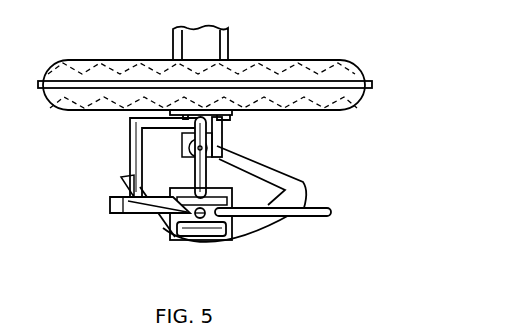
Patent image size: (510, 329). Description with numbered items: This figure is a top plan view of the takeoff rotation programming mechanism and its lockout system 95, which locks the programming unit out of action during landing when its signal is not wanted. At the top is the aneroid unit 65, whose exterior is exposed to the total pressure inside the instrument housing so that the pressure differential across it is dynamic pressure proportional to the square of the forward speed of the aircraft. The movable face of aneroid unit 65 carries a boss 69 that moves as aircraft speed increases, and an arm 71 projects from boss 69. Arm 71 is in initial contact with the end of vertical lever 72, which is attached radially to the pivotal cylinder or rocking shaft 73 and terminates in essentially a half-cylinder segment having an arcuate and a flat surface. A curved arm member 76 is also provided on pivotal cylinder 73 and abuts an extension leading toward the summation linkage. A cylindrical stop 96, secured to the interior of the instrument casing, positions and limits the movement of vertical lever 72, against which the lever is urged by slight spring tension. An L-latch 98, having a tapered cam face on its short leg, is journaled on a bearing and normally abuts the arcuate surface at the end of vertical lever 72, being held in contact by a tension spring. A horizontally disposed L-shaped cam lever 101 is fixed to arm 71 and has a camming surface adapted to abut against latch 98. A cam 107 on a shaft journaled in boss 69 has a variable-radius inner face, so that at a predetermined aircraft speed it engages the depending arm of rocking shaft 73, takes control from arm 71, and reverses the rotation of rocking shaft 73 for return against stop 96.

The aneroid unit 65 is at (354, 63).
The boss 69 is at (220, 130).
The arm 71 is at (195, 172).
The vertical lever 72 is at (178, 218).
The pivotal cylinder 73 is at (232, 192).
The curved arm member 76 is at (297, 218).
The lockout system 95 is at (110, 183).
The cylindrical stop 96 is at (210, 222).
The L-latch 98 is at (148, 215).
The L-shaped cam lever 101 is at (130, 142).
The cam 107 is at (287, 175).